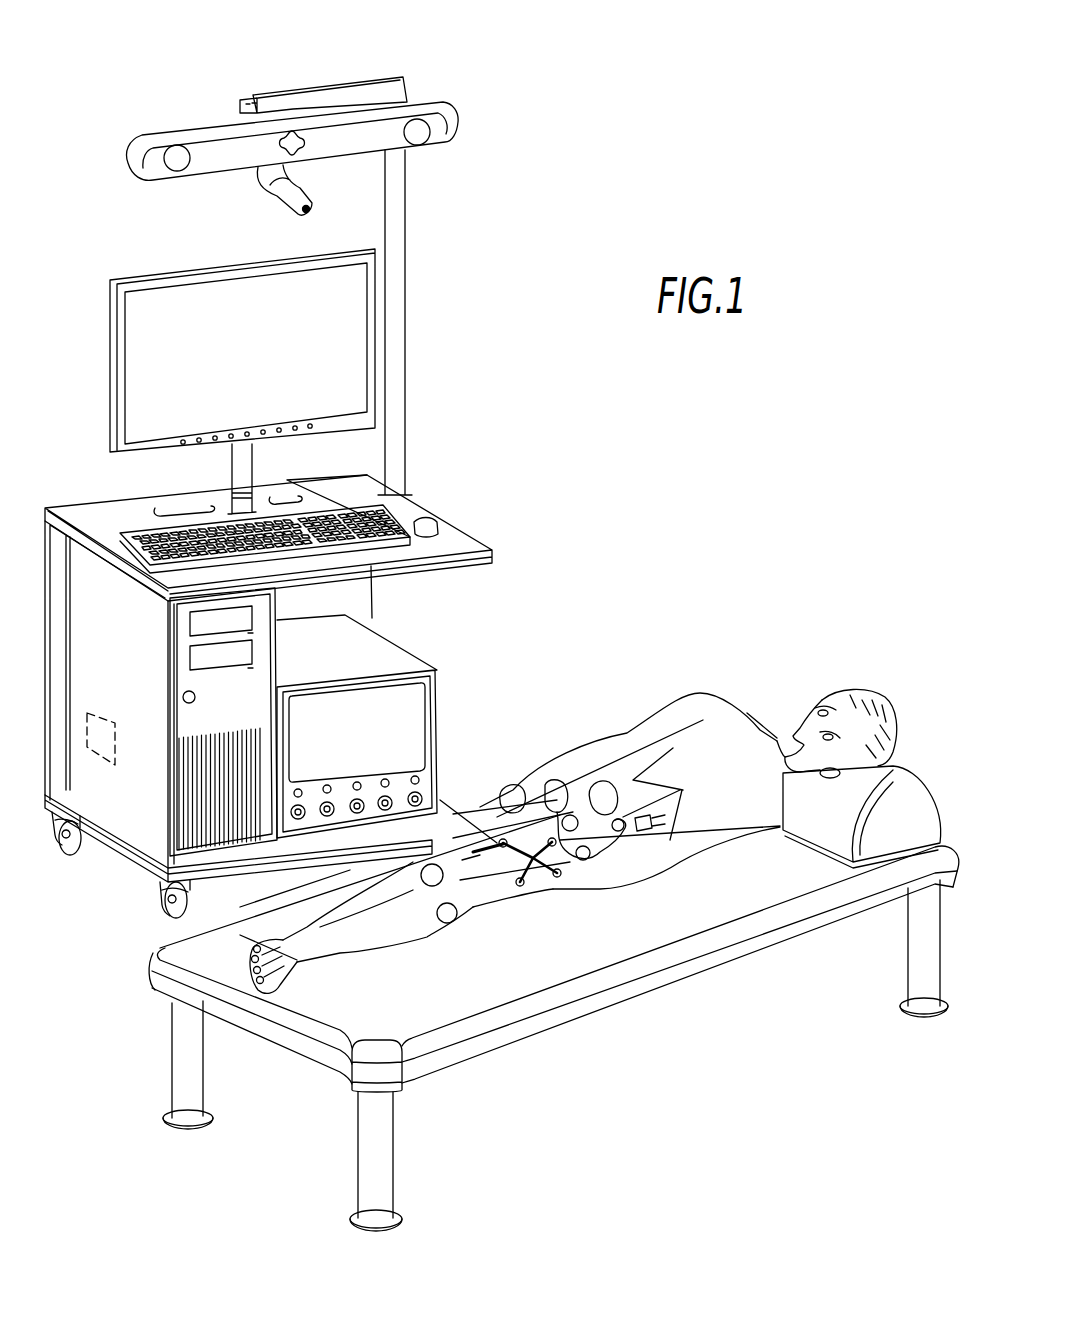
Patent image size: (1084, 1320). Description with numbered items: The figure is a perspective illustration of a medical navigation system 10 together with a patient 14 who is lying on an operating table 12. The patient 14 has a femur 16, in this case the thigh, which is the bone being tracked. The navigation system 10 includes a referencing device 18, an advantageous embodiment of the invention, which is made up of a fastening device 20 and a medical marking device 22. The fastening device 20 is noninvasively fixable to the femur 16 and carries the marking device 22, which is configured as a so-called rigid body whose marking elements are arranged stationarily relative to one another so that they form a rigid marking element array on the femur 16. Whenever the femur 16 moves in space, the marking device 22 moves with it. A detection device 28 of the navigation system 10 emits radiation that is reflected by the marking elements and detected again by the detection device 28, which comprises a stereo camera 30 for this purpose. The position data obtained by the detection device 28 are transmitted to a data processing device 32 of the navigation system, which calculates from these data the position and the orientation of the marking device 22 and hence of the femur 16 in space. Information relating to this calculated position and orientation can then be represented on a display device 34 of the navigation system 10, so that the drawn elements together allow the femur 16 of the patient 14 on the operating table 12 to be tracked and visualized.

The medical navigation system 10 is at (497, 237).
The operating table 12 is at (786, 935).
The patient 14 is at (693, 760).
The femur 16 is at (490, 823).
The referencing device 18 is at (474, 868).
The fastening device 20 is at (467, 840).
The medical marking device 22 is at (516, 888).
The detection device 28 is at (204, 113).
The stereo camera 30 is at (348, 138).
The data processing device 32 is at (129, 672).
The display device 34 is at (262, 362).